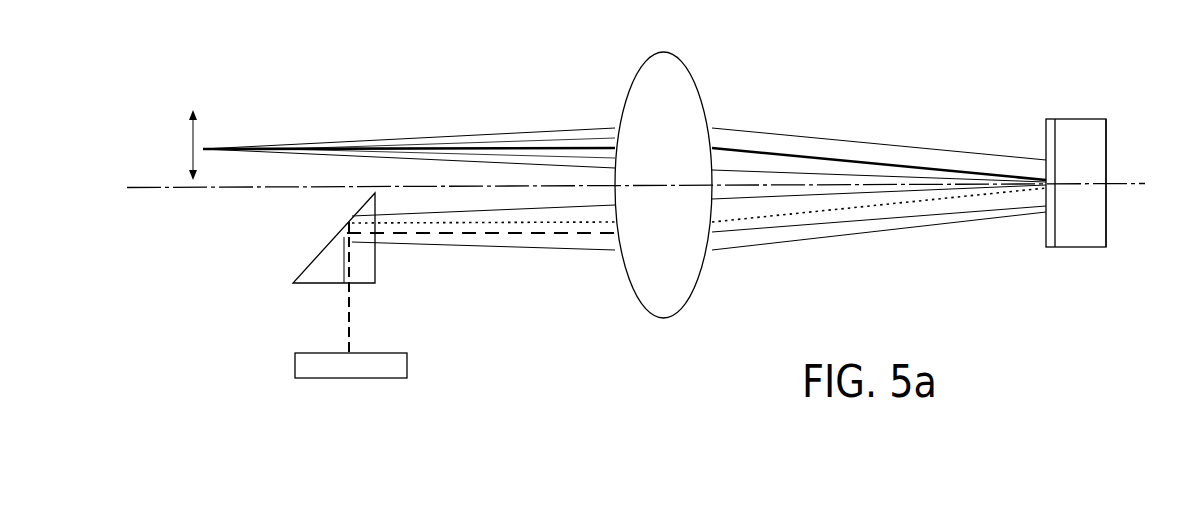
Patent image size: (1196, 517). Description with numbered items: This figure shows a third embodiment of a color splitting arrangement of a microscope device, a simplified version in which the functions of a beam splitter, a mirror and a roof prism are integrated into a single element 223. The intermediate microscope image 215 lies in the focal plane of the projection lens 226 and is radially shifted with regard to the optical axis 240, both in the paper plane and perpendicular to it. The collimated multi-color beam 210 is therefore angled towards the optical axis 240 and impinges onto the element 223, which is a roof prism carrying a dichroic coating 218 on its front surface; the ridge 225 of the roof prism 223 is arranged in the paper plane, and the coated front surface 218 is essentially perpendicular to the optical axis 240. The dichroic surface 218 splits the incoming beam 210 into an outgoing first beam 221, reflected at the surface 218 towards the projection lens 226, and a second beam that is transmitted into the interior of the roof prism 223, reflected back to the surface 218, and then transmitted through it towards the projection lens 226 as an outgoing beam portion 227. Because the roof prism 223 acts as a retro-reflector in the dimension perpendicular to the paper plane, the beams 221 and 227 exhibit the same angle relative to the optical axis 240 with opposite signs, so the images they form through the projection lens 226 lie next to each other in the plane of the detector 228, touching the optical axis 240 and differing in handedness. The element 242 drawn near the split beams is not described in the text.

The collimated multi-color beam 210 is at (447, 130).
The intermediate microscope image 215 is at (190, 148).
The dichroic coating 218 is at (1048, 226).
The first beam 221 is at (463, 237).
The roof prism 223 is at (1080, 145).
The ridge 225 is at (1107, 207).
The projection lens 226 is at (660, 268).
The outgoing beam portion 227 is at (540, 237).
The detector 228 is at (323, 363).
The optical axis 240 is at (614, 189).
The beam splitter 242 is at (314, 262).